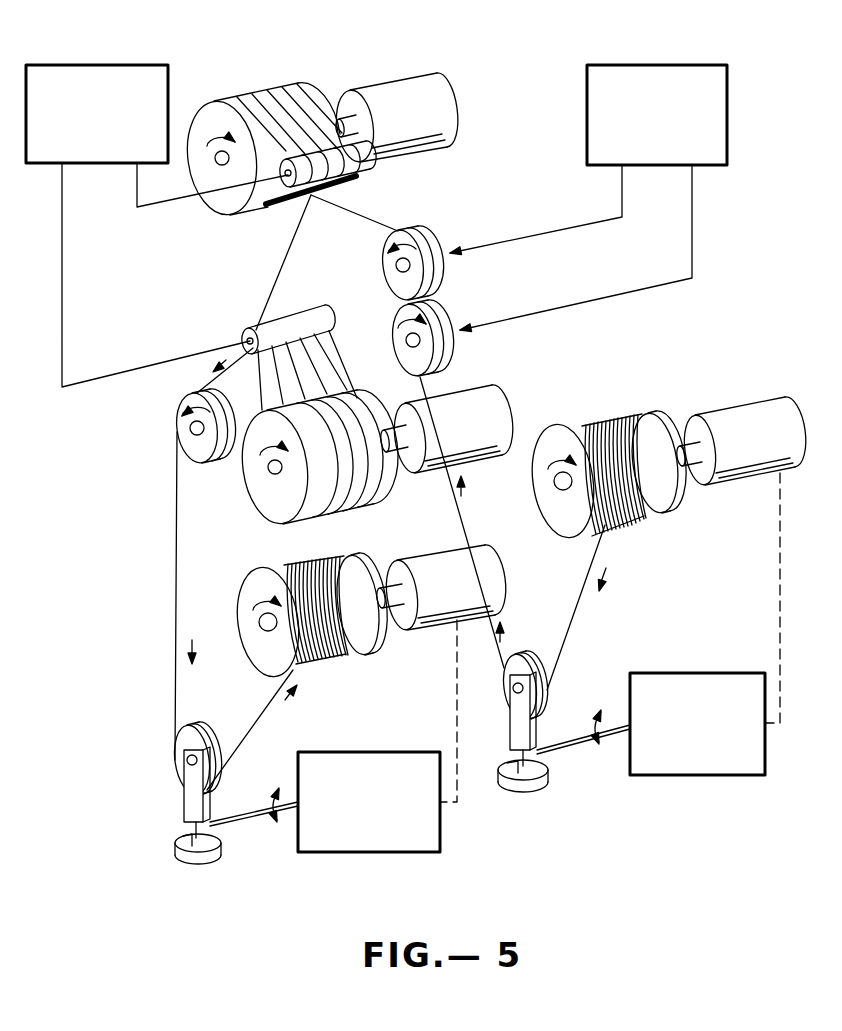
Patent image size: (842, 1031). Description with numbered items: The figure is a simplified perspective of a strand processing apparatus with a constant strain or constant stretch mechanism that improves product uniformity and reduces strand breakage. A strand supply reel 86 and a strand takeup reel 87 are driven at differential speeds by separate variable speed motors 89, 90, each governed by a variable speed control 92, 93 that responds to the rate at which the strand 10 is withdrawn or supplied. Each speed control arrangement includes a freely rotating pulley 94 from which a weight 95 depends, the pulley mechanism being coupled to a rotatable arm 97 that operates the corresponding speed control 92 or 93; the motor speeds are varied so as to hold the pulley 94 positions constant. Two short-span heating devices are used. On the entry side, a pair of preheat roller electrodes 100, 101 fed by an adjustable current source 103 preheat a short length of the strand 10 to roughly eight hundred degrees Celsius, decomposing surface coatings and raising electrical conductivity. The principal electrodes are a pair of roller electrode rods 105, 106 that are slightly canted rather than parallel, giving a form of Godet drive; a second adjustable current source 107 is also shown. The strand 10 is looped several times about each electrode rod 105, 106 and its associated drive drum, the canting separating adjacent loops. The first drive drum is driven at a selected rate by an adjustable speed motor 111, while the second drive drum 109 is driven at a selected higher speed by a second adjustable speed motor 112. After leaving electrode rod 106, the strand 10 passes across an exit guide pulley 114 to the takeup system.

The strand 10 is at (457, 517).
The strand supply reel 86 is at (663, 514).
The strand takeup reel 87 is at (351, 556).
The variable speed motor 89 is at (723, 404).
The variable speed motor 90 is at (441, 626).
The variable speed control 92 is at (673, 778).
The variable speed control 93 is at (334, 853).
The pulley 94 is at (202, 730).
The weight 95 is at (212, 863).
The rotatable arm 97 is at (256, 810).
The preheat roller electrode 100 is at (444, 314).
The preheat roller electrode 101 is at (430, 236).
The adjustable current source 103 is at (625, 66).
The roller electrode rod 105 is at (376, 166).
The roller electrode rod 106 is at (333, 308).
The adjustable current source 107 is at (117, 65).
The drive drum 109 is at (268, 498).
The adjustable speed motor 111 is at (412, 78).
The adjustable speed motor 112 is at (459, 392).
The exit guide pulley 114 is at (204, 465).